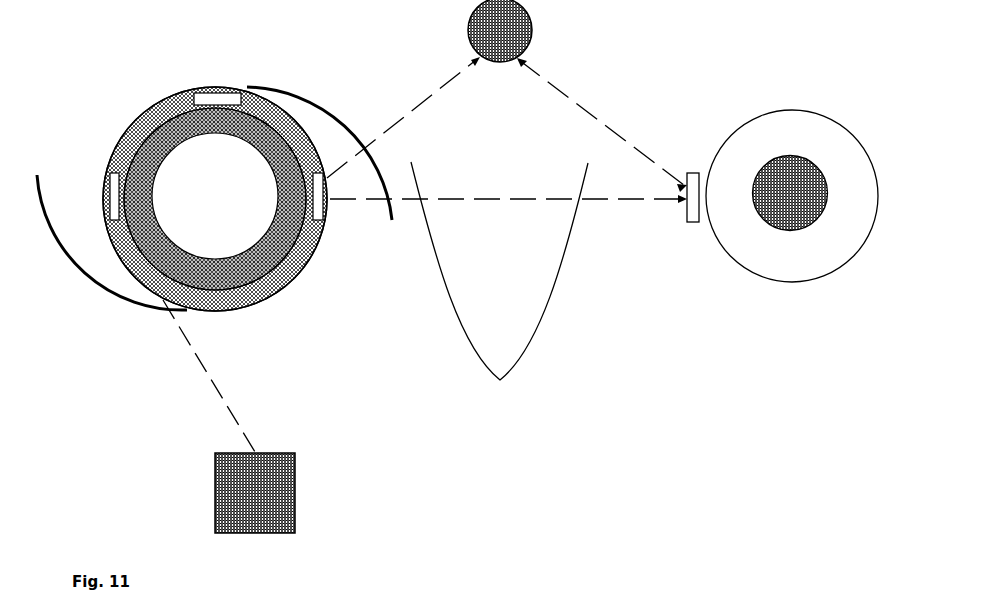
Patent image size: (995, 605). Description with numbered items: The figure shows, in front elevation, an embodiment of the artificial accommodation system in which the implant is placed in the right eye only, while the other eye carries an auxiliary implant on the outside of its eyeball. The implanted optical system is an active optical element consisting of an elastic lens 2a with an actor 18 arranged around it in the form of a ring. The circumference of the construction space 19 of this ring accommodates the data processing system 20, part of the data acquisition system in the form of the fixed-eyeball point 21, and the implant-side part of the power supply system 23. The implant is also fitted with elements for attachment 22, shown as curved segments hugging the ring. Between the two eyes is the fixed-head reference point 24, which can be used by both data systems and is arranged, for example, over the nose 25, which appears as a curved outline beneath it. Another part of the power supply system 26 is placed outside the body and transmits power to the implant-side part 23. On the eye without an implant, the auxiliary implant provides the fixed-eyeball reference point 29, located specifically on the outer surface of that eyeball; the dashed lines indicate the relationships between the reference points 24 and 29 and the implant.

The actor 18 is at (150, 102).
The construction space 19 is at (180, 90).
The elastic lens 2a is at (202, 183).
The data processing system 20 is at (215, 98).
The fixed-eyeball point 21 is at (325, 217).
The power supply system (implant side) 23 is at (117, 195).
The elements for attachment 22 is at (113, 285).
The fixed-head reference point 24 is at (528, 42).
The nose 25 is at (475, 282).
The power supply system (external part) 26 is at (270, 484).
The fixed-eyeball reference point 29 is at (700, 236).